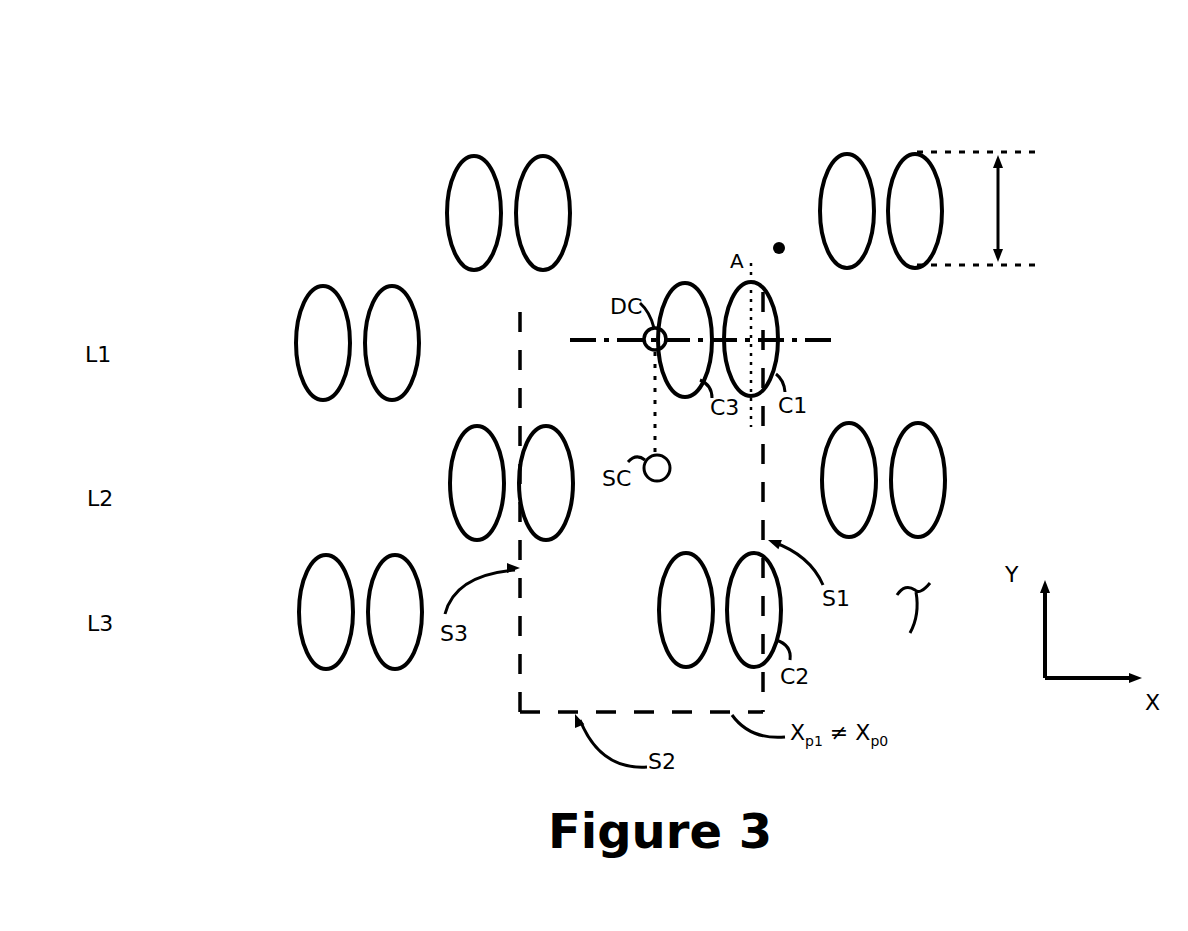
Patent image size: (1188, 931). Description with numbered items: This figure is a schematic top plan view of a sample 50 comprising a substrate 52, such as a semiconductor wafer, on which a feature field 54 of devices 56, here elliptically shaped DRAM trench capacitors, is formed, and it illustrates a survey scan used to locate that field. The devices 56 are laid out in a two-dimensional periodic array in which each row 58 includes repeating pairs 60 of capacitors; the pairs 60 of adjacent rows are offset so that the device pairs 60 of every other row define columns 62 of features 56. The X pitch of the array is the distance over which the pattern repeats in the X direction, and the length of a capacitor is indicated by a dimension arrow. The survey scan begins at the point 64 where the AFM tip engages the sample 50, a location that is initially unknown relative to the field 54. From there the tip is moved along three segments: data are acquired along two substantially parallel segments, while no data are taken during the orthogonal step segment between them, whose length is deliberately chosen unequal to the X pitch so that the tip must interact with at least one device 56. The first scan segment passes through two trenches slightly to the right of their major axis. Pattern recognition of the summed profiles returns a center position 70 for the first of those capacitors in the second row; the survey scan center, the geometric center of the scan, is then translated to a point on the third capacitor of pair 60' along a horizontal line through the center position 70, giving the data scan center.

The sample 50 is at (1032, 44).
The substrate 52 is at (916, 627).
The feature field 54 is at (962, 106).
The devices 56 is at (850, 270).
The row 58 is at (127, 197).
The pairs of capacitors 60 is at (599, 489).
The pair 60' is at (677, 327).
The columns 62 is at (808, 133).
The point of tip-sample engage 64 is at (780, 247).
The center position 70 is at (650, 351).